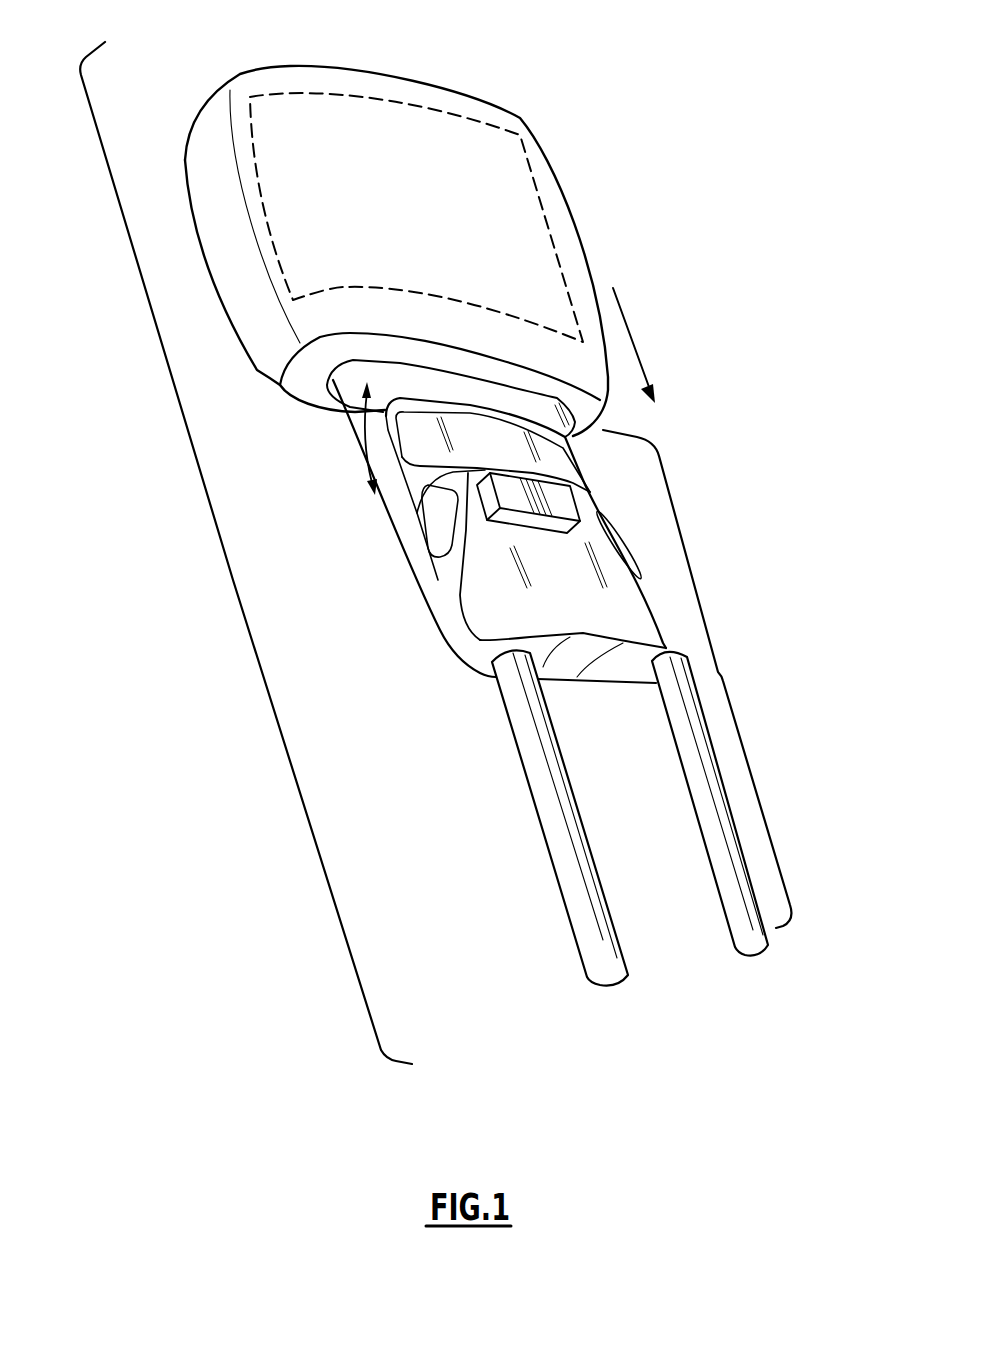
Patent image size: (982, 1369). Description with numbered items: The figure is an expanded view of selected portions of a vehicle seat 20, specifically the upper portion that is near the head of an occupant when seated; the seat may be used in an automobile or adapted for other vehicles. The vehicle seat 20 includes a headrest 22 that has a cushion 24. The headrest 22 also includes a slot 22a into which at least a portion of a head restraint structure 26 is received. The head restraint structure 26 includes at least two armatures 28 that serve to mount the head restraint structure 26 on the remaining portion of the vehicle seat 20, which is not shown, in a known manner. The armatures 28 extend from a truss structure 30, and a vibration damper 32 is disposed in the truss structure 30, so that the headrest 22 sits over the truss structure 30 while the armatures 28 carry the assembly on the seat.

The vehicle seat 20 is at (233, 580).
The headrest 22 is at (575, 251).
The slot 22a is at (360, 448).
The cushion 24 is at (490, 122).
The head restraint structure 26 is at (723, 678).
The armatures 28 is at (706, 793).
The truss structure 30 is at (476, 596).
The vibration damper 32 is at (518, 522).